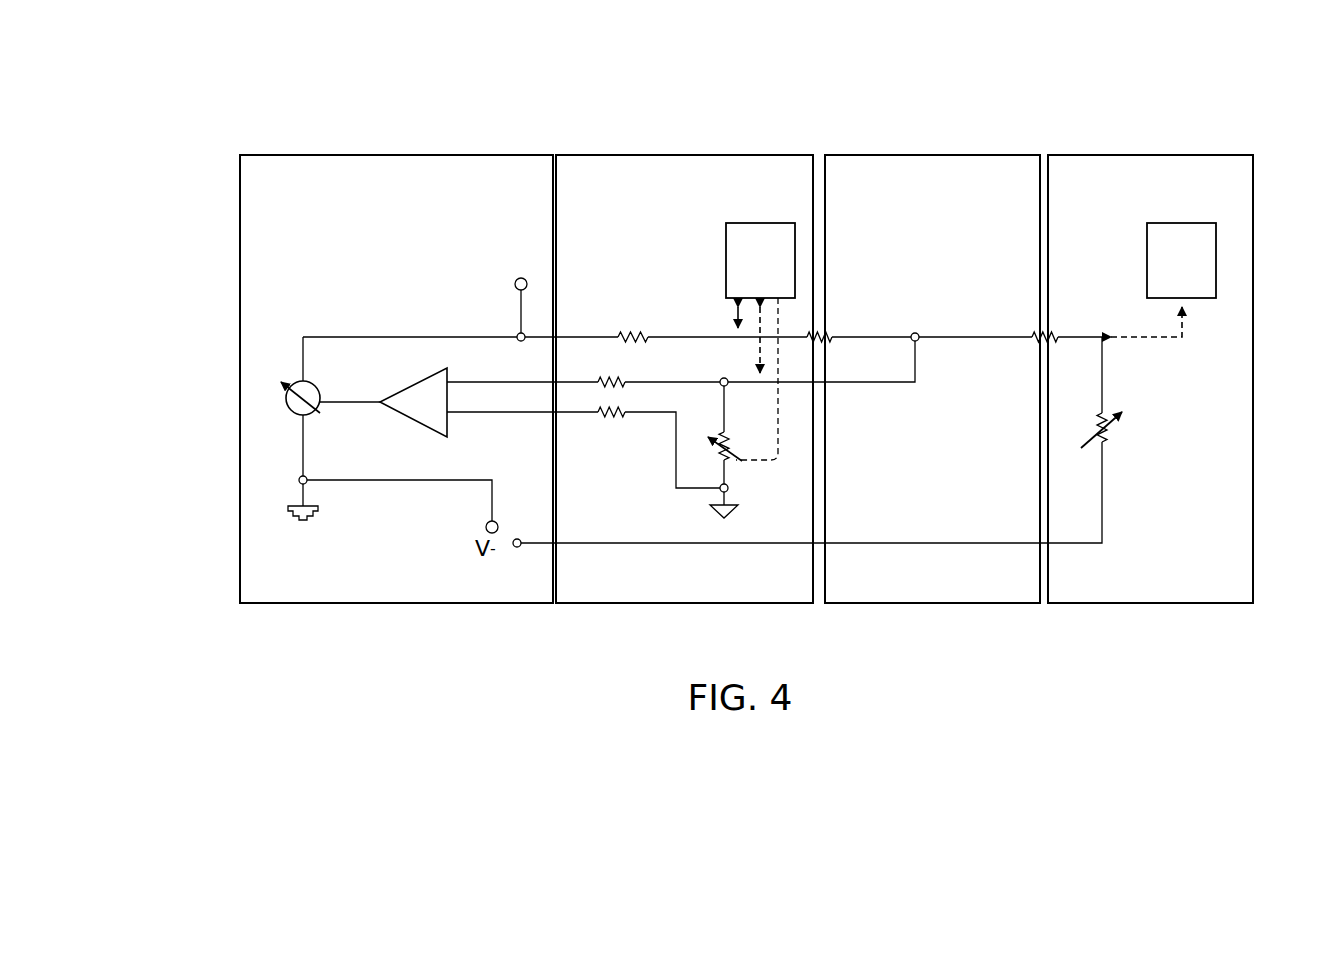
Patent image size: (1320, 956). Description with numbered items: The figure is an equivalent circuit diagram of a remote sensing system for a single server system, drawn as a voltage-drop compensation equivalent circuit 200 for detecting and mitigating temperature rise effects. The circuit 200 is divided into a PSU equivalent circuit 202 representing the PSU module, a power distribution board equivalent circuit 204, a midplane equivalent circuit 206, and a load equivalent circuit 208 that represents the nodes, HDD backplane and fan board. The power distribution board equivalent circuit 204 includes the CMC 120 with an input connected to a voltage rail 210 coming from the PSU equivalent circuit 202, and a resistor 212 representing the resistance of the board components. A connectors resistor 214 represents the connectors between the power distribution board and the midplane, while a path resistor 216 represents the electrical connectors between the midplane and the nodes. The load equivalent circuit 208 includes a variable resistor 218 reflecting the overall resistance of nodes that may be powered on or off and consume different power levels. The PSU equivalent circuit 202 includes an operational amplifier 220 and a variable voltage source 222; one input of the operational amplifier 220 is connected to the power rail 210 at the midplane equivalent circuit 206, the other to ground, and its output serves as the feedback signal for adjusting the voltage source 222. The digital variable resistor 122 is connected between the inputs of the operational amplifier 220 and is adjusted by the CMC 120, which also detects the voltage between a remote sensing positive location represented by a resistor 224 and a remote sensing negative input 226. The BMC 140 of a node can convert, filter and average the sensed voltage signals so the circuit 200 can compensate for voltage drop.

The voltage-drop compensation equivalent circuit 200 is at (180, 76).
The PSU equivalent circuit 202 is at (292, 155).
The power distribution board equivalent circuit 204 is at (645, 155).
The midplane equivalent circuit 206 is at (932, 155).
The load equivalent circuit 208 is at (1150, 155).
The voltage rail 210 is at (521, 277).
The resistor (R_path_PDB) 212 is at (605, 300).
The connectors resistor 214 is at (830, 330).
The path resistor (R_path_MN) 216 is at (1058, 330).
The variable resistor (R_Loads) 218 is at (1132, 425).
The operational amplifier 220 is at (406, 412).
The variable voltage source 222 is at (283, 392).
The resistor (R_SNS+) 224 is at (630, 415).
The remote sensing negative input (R_SNS-) 226 is at (625, 385).
The CMC 120 is at (760, 223).
The variable resistor 122 is at (732, 465).
The BMC 140 is at (1216, 258).